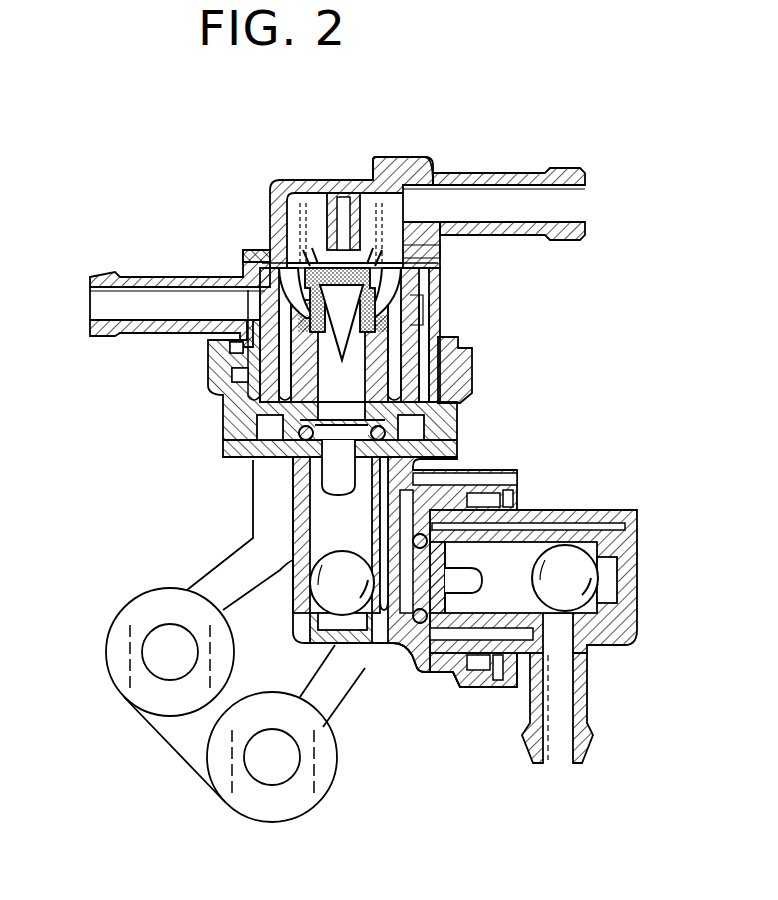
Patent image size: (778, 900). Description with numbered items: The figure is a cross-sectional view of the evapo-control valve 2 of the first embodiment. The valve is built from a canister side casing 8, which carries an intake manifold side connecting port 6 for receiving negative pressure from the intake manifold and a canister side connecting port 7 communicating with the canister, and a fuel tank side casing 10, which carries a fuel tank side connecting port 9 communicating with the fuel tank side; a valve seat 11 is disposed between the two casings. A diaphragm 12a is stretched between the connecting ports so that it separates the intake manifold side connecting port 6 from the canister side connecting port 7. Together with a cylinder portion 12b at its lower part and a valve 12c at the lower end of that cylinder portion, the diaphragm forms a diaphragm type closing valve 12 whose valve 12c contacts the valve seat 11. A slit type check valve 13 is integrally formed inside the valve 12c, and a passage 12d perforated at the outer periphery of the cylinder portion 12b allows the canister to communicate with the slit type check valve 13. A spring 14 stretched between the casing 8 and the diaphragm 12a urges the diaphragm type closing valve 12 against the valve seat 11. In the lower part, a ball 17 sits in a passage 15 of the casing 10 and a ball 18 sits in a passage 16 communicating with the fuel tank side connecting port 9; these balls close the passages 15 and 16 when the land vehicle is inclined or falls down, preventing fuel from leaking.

The evapo-control valve 2 is at (355, 183).
The intake manifold side connecting port 6 is at (535, 173).
The canister side connecting port 7 is at (142, 272).
The canister side casing 8 is at (387, 163).
The fuel tank side connecting port 9 is at (588, 712).
The fuel tank side casing 10 is at (222, 392).
The valve seat 11 is at (375, 352).
The diaphragm type closing valve 12 is at (329, 305).
The diaphragm 12a is at (418, 253).
The cylinder portion 12b is at (425, 310).
The valve 12c is at (297, 322).
The passage 12d is at (270, 262).
The slit type check valve 13 is at (345, 362).
The spring 14 is at (303, 186).
The passage 15 is at (330, 500).
The passage 16 is at (487, 593).
The ball 17 is at (347, 585).
The ball 18 is at (570, 557).